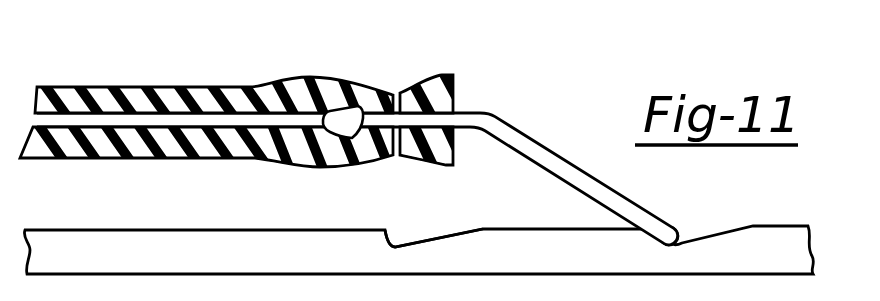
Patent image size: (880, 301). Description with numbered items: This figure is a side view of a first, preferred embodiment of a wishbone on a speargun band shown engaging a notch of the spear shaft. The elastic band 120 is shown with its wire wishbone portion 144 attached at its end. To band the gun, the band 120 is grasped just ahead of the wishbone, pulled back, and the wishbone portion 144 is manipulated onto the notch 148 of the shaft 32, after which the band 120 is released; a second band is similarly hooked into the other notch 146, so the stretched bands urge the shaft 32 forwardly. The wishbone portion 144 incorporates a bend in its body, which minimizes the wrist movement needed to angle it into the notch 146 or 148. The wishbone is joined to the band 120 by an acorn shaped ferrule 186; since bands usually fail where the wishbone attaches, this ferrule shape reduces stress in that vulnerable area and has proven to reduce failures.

The band 120 is at (207, 87).
The acorn shaped ferrule 186 is at (347, 118).
The wishbone portion 144 is at (585, 172).
The notch 146 is at (675, 226).
The notch 148 is at (388, 243).
The shaft 32 is at (778, 244).